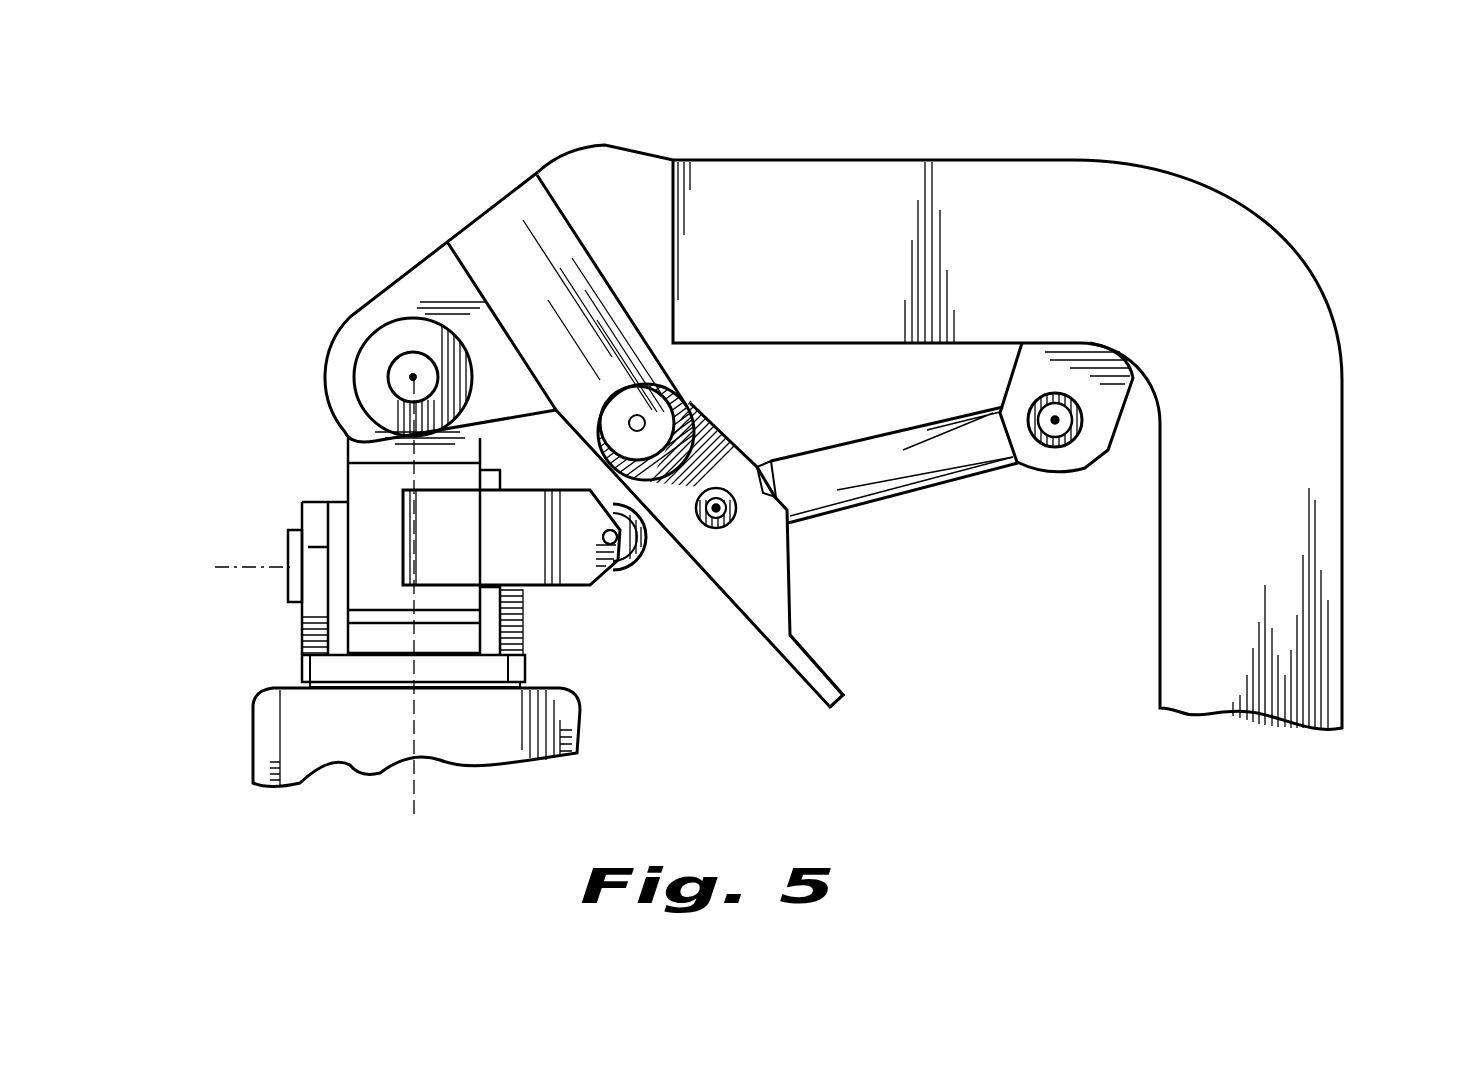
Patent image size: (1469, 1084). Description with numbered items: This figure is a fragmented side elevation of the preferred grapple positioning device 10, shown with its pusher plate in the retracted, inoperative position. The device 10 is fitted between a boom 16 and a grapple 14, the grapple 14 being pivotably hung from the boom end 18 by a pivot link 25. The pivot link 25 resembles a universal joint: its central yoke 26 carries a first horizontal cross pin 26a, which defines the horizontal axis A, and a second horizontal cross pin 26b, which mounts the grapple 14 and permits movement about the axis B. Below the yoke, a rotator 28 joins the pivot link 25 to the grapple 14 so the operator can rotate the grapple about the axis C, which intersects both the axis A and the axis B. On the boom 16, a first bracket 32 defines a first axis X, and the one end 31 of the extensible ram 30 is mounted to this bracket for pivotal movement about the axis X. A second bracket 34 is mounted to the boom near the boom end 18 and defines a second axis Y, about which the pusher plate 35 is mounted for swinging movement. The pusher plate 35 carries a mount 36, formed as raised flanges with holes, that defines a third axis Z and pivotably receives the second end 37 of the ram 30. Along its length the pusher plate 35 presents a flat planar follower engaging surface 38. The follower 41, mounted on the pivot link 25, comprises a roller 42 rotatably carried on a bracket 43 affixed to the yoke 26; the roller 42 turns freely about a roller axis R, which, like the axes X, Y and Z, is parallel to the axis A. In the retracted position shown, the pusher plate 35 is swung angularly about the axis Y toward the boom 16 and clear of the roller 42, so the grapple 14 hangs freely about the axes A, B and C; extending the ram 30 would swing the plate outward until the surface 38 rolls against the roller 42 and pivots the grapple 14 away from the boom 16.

The grapple positioning device 10 is at (980, 658).
The grapple 14 is at (245, 738).
The boom 16 is at (1310, 278).
The boom end 18 is at (420, 282).
The pivot link 25 is at (346, 480).
The central yoke 26 is at (363, 538).
The first horizontal cross pin 26a is at (400, 365).
The second horizontal cross pin 26b is at (292, 600).
The rotator 28 is at (515, 670).
The extensible ram 30 is at (893, 510).
The ram first end 31 is at (933, 455).
The first bracket 32 is at (1055, 372).
The second bracket 34 is at (590, 283).
The pusher plate 35 is at (800, 612).
The mount 36 is at (720, 432).
The ram second end 37 is at (762, 465).
The follower engaging surface 38 is at (763, 648).
The follower 41 is at (652, 552).
The roller 42 is at (620, 563).
The bracket 43 is at (503, 498).
The horizontal axis A is at (410, 378).
The axis B is at (228, 566).
The rotation axis C is at (418, 798).
The roller axis R is at (604, 537).
The first axis X is at (1055, 422).
The second axis Y is at (645, 420).
The third axis Z is at (733, 520).